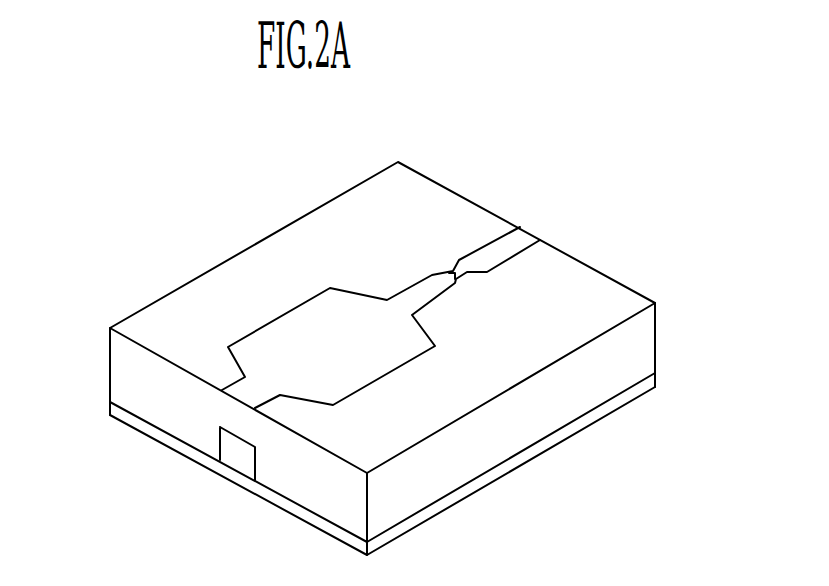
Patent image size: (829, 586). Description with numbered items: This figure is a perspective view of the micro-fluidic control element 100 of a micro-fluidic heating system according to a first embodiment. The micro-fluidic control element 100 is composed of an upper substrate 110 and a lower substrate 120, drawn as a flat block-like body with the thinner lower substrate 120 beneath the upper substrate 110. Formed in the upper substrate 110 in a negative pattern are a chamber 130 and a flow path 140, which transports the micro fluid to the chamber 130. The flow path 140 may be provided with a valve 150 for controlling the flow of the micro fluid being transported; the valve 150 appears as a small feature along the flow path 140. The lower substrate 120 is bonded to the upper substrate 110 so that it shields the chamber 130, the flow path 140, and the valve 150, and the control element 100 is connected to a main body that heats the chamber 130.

The micro-fluidic control element 100 is at (680, 335).
The upper substrate 110 is at (117, 365).
The lower substrate 120 is at (115, 412).
The chamber 130 is at (285, 335).
The flow path 140 is at (420, 293).
The valve 150 is at (455, 264).